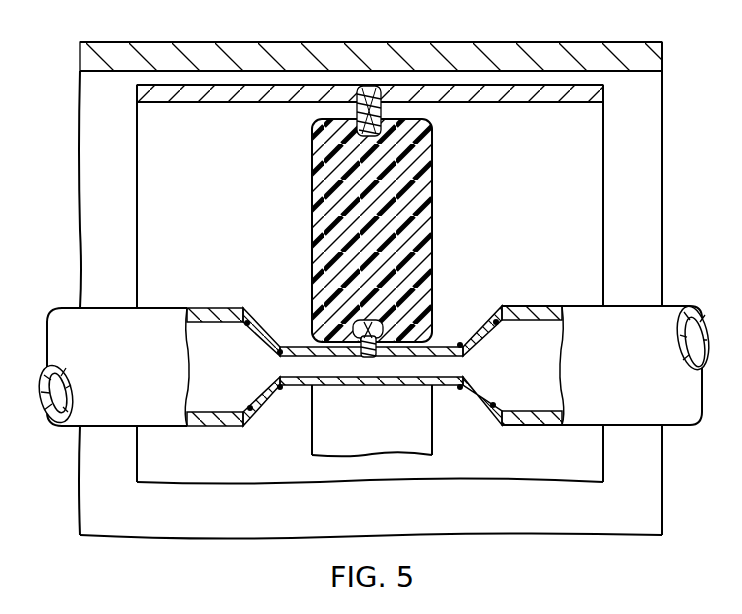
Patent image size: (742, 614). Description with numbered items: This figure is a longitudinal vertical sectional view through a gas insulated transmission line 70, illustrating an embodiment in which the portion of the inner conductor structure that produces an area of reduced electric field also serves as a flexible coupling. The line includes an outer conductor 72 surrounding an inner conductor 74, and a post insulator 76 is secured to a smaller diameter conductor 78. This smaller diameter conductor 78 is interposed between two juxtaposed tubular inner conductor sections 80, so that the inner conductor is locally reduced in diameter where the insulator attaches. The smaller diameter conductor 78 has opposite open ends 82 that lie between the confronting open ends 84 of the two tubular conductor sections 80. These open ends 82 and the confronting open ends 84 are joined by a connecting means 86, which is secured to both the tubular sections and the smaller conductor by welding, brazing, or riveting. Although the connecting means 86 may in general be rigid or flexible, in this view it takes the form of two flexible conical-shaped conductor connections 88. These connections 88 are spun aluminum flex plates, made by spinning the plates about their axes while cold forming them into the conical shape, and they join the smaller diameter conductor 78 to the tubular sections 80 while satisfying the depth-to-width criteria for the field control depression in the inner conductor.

The gas insulated transmission line 70 is at (579, 32).
The outer conductor 72 is at (652, 61).
The inner conductor 74 is at (673, 305).
The post insulator 76 is at (432, 228).
The smaller diameter conductor 78 is at (437, 346).
The tubular inner conductor sections 80 is at (198, 306).
The open ends 82 is at (282, 344).
The confronting open ends 84 is at (243, 305).
The connecting means 86 is at (456, 322).
The flexible conical-shaped conductor connections 88 is at (265, 341).